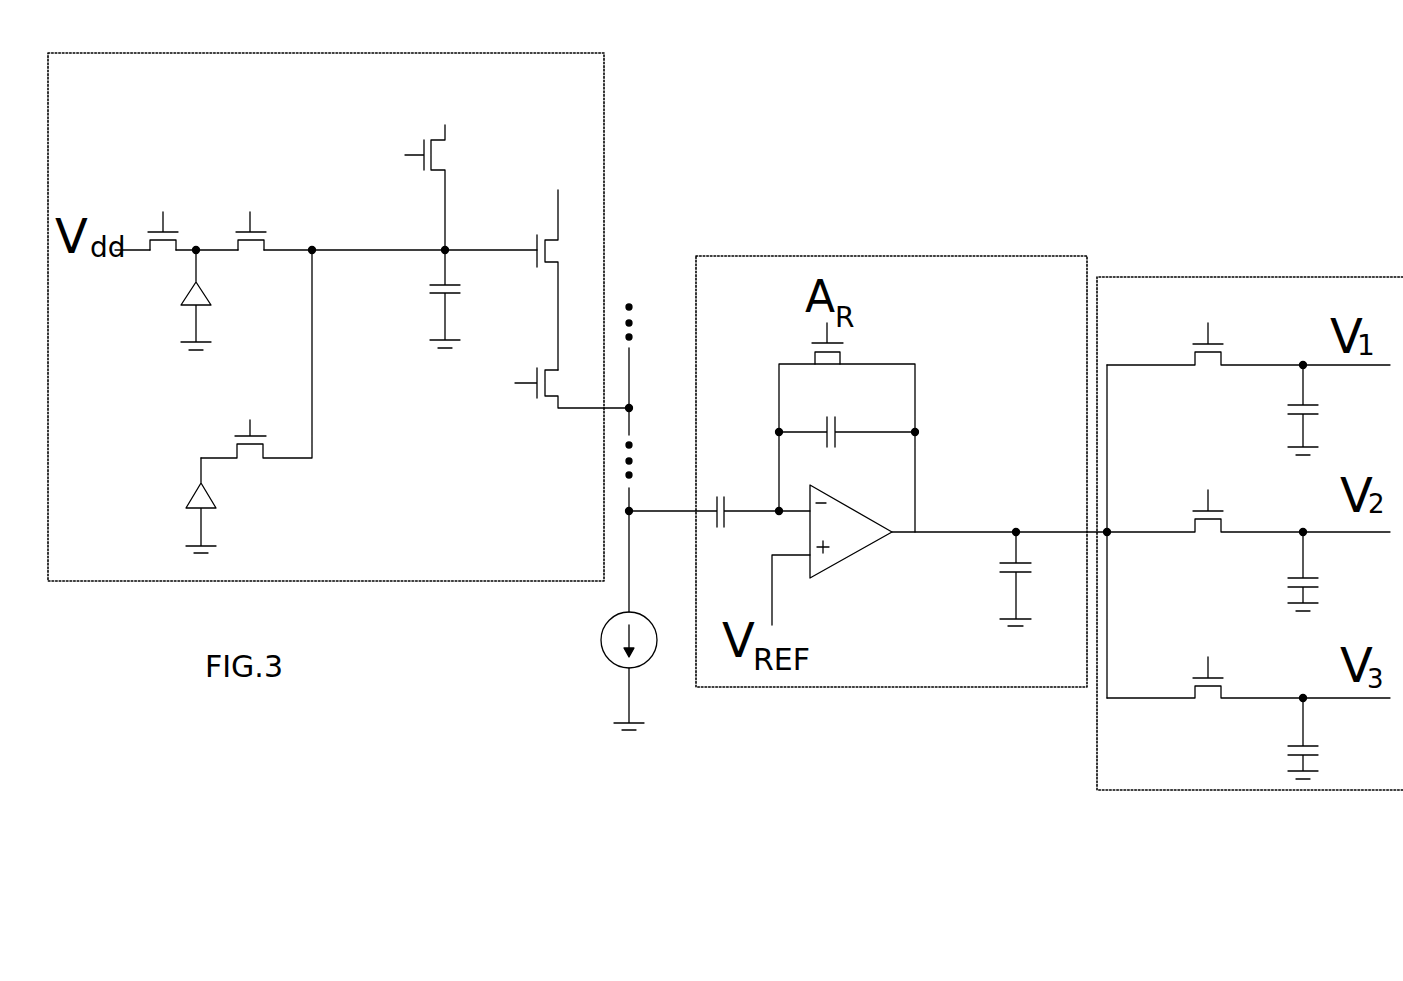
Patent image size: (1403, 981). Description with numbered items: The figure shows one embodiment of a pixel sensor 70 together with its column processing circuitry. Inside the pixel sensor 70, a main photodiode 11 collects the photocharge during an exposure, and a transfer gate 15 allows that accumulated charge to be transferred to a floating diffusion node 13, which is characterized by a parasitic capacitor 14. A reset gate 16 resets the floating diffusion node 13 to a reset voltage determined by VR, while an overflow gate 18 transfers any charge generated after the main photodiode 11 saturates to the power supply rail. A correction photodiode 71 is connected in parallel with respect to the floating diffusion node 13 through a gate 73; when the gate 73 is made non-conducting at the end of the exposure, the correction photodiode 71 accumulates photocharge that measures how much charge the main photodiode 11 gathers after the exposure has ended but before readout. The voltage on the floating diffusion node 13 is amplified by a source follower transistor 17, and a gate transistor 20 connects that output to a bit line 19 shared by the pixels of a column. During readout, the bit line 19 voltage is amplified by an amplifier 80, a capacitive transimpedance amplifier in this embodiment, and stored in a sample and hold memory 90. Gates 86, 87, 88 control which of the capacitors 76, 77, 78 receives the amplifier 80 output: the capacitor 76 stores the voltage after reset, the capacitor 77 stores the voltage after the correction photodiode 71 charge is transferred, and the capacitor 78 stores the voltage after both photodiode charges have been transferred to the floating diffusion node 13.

The main photodiode 11 is at (207, 293).
The floating diffusion node 13 is at (340, 251).
The parasitic capacitor 14 is at (455, 283).
The transfer gate 15 is at (253, 242).
The reset gate 16 is at (436, 152).
The source follower transistor 17 is at (548, 243).
The overflow gate 18 is at (167, 242).
The bit line 19 is at (629, 361).
The gate transistor 20 is at (553, 375).
The pixel sensor 70 is at (604, 147).
The correction photodiode 71 is at (187, 497).
The gate 73 is at (260, 447).
The capacitor 76 is at (1315, 406).
The capacitor 77 is at (1315, 578).
The capacitor 78 is at (1315, 746).
The amplifier 80 is at (1012, 257).
The gate 86 is at (1217, 356).
The gate 87 is at (1215, 522).
The gate 88 is at (1215, 689).
The sample and hold memory 90 is at (1135, 277).